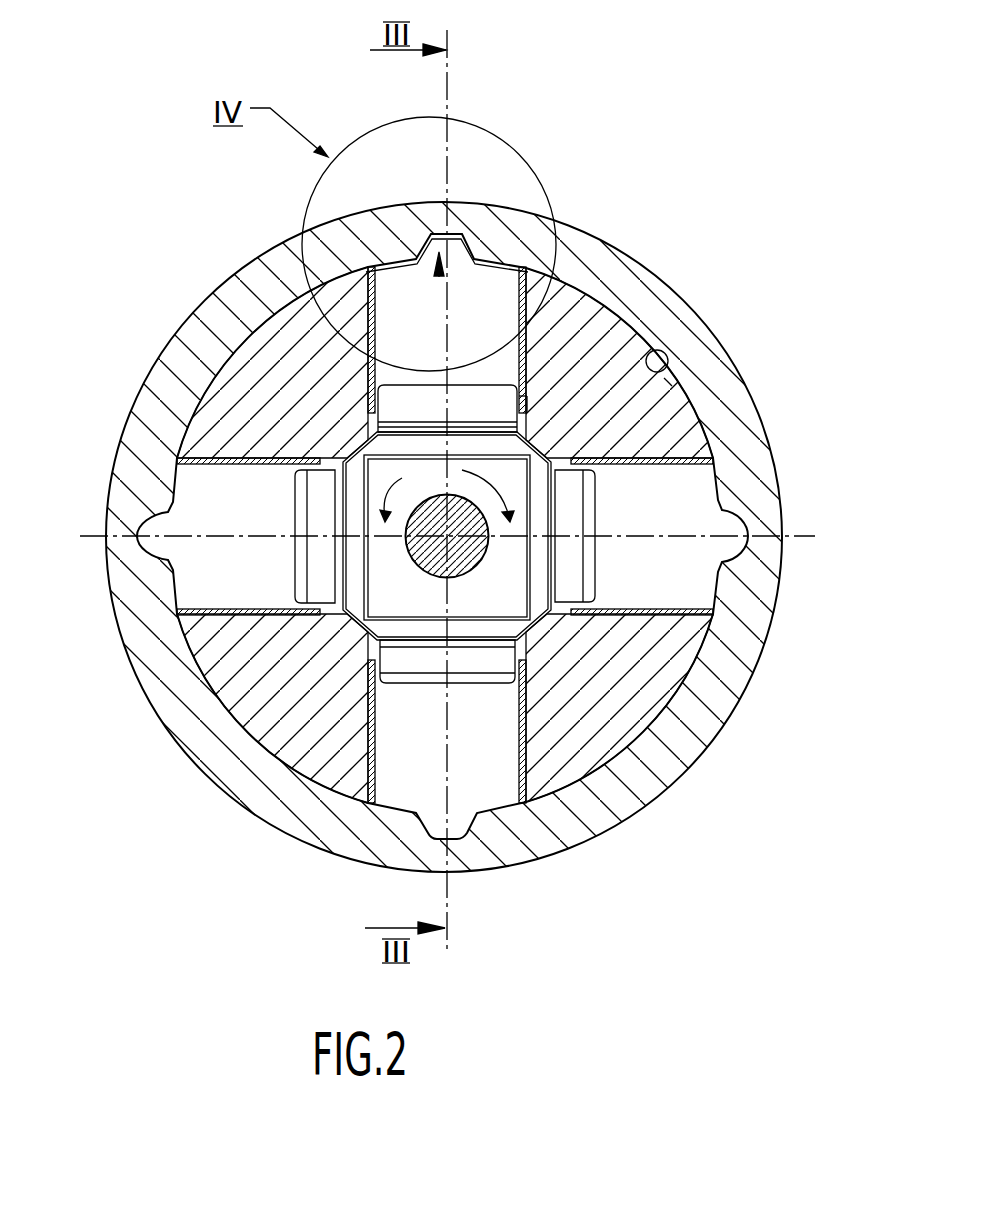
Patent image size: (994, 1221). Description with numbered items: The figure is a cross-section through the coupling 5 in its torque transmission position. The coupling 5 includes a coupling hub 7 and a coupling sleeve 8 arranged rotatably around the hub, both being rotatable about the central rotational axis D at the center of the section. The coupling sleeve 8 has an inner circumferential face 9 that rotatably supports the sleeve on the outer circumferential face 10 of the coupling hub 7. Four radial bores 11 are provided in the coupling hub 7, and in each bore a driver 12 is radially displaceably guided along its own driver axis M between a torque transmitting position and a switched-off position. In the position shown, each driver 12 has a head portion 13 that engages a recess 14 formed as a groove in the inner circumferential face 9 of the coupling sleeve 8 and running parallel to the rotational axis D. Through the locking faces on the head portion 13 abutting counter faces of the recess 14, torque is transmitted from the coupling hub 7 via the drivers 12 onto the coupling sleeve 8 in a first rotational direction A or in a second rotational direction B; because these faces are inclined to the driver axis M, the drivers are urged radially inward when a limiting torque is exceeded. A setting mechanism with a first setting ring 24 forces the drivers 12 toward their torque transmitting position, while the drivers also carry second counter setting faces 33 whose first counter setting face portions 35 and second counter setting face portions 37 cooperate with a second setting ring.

The coupling 5 is at (460, 442).
The coupling hub 7 is at (610, 333).
The coupling sleeve 8 is at (677, 317).
The inner circumferential face 9 is at (668, 355).
The outer circumferential face 10 is at (668, 372).
The radial bores 11 is at (518, 307).
The drivers 12 is at (447, 340).
The head portion 13 is at (453, 232).
The recesses 14 is at (440, 279).
The first setting ring 24 is at (447, 536).
The second counter setting faces 33 is at (479, 413).
The first counter setting face portions 35 is at (517, 428).
The second counter setting face portions 37 is at (527, 402).
The first rotational direction A is at (388, 493).
The second rotational direction B is at (488, 493).
The rotational axis D is at (455, 548).
The driver axis M is at (447, 137).